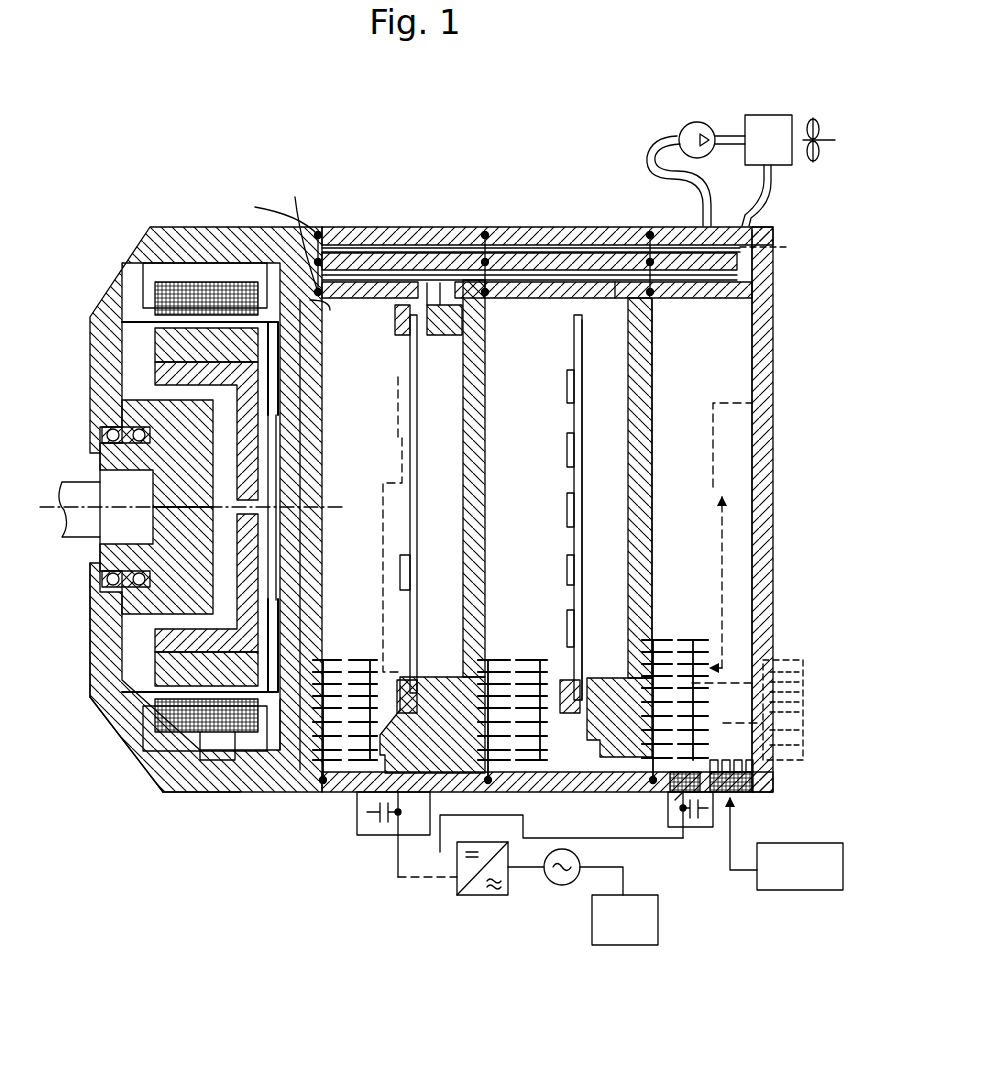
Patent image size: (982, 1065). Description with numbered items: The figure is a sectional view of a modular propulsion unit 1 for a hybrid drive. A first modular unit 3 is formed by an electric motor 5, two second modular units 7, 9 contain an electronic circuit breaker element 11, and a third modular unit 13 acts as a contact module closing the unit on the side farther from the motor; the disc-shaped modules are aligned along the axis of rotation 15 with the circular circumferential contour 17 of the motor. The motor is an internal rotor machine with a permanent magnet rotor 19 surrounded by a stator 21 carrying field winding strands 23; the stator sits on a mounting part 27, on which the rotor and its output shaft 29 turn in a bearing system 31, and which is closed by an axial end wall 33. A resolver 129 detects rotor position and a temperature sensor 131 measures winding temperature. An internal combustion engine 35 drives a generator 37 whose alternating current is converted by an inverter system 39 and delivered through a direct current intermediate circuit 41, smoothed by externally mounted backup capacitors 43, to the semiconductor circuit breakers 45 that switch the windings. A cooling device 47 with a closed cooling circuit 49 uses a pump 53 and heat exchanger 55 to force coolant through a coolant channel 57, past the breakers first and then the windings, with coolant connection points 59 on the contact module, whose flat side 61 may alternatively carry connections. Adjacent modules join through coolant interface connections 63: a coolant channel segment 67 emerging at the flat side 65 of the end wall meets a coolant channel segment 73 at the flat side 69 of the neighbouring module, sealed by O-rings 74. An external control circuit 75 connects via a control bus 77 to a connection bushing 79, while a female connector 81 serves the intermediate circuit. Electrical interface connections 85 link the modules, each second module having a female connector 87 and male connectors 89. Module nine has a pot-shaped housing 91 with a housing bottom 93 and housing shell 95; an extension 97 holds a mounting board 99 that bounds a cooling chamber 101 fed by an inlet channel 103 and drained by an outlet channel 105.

The propulsion unit 1 is at (146, 794).
The first modular unit 3 is at (118, 742).
The electric motor 5 is at (150, 668).
The second modular unit 7 is at (350, 227).
The second modular unit 9 is at (500, 227).
The electronic circuit breaker element 11 is at (442, 445).
The third modular unit 13 is at (778, 386).
The axis of rotation 15 is at (50, 506).
The circumferential contour 17 is at (288, 792).
The permanent magnet rotor 19 is at (150, 373).
The stator 21 is at (188, 772).
The field winding strands 23 is at (180, 282).
The mounting part 27 is at (105, 636).
The output shaft 29 is at (80, 534).
The bearing system 31 is at (100, 432).
The axial end wall 33 is at (311, 392).
The internal combustion engine 35 is at (640, 945).
The generator 37 is at (561, 885).
The inverter system 39 is at (481, 895).
The direct current intermediate circuit 41 is at (535, 815).
The backup capacitors 43 is at (378, 835).
The semiconductor circuit breakers 45 is at (566, 388).
The cooling device 47 is at (800, 166).
The closed cooling circuit 49 is at (654, 158).
The pump 53 is at (697, 122).
The heat exchanger 55 is at (770, 115).
The coolant channel 57 is at (490, 305).
The coolant connection points 59 is at (752, 215).
The flat side 61 is at (775, 290).
The coolant interface connections 63 is at (296, 233).
The flat side 65 is at (278, 437).
The coolant channel segment 67 is at (275, 209).
The flat side 69 is at (322, 328).
The coolant channel segment 73 is at (415, 280).
The O-rings 74 is at (322, 302).
The control circuit 75 is at (808, 886).
The control bus 77 is at (736, 845).
The connection bushing 79 is at (755, 780).
The female connector 81 is at (675, 801).
The electrical interface connections 85 is at (667, 638).
The female connector 87 is at (368, 658).
The male connectors 89 is at (480, 674).
The pot-shaped housing 91 is at (654, 392).
The housing bottom 93 is at (652, 470).
The housing shell 95 is at (560, 262).
The extension 97 is at (604, 680).
The mounting board 99 is at (417, 532).
The cooling chamber 101 is at (574, 588).
The inlet channel 103 is at (632, 315).
The outlet channel 105 is at (615, 282).
The resolver 129 is at (300, 467).
The temperature sensor 131 is at (218, 742).